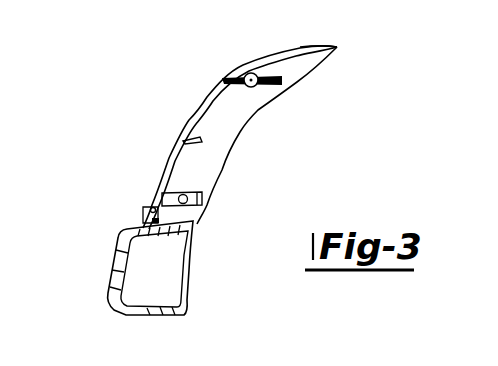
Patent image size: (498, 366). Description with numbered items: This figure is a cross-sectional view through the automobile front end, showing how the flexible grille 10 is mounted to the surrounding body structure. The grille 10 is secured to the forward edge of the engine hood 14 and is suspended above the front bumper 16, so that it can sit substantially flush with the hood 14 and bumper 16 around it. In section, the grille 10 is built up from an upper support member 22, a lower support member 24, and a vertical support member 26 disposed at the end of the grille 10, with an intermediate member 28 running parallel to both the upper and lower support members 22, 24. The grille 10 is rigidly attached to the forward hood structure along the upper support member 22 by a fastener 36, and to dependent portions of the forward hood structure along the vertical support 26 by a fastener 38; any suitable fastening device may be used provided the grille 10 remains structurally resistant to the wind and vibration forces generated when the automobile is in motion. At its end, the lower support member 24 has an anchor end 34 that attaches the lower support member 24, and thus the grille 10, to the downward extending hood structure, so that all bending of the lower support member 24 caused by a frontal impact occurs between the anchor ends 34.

The flexible grille 10 is at (167, 138).
The engine hood 14 is at (286, 50).
The front bumper 16 is at (118, 263).
The upper support member 22 is at (244, 84).
The lower support member 24 is at (150, 221).
The vertical support members 26 is at (170, 172).
The intermediate member 28 is at (202, 140).
The anchor ends 34 is at (203, 197).
The fastener 36 is at (252, 72).
The fastener 38 is at (160, 195).